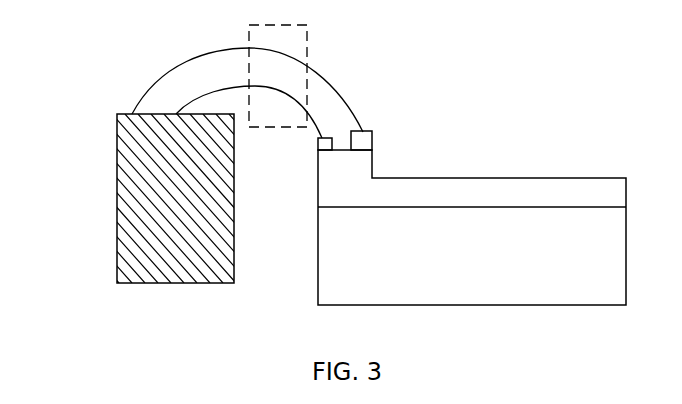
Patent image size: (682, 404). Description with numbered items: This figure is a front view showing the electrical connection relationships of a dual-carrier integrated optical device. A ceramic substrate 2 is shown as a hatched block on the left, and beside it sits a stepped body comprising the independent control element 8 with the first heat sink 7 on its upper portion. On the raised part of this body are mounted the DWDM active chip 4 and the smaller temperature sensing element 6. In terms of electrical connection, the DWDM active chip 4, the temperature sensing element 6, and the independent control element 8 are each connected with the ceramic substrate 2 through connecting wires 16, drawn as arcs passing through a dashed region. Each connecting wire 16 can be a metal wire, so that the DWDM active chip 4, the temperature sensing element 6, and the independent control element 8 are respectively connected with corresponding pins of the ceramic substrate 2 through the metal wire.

The ceramic substrate 2 is at (117, 228).
The DWDM active chip 4 is at (372, 131).
The temperature sensing element 6 is at (318, 148).
The first heat sink 7 is at (485, 178).
The independent control element 8 is at (318, 260).
The connecting wire 16 is at (307, 56).